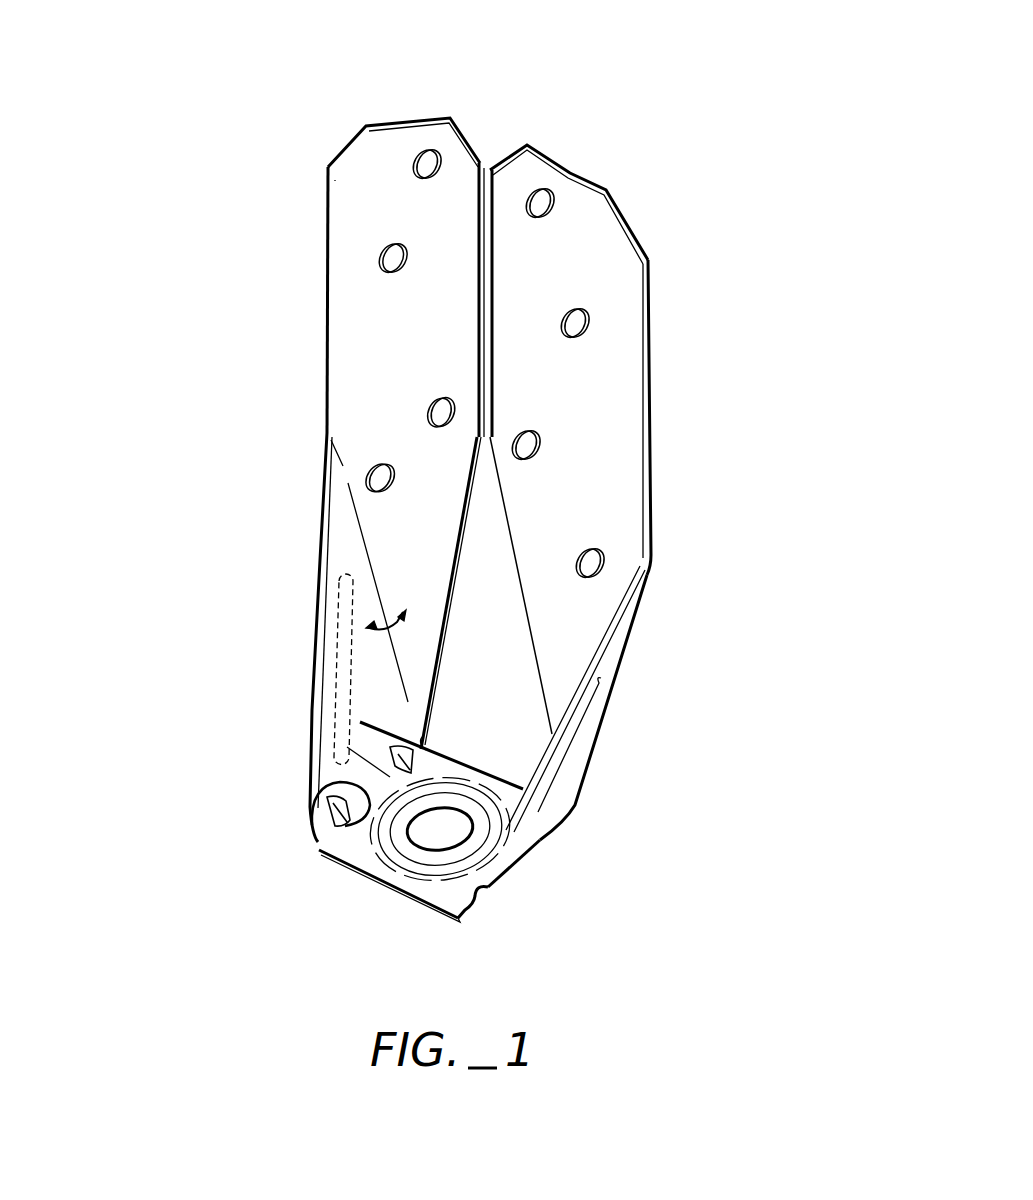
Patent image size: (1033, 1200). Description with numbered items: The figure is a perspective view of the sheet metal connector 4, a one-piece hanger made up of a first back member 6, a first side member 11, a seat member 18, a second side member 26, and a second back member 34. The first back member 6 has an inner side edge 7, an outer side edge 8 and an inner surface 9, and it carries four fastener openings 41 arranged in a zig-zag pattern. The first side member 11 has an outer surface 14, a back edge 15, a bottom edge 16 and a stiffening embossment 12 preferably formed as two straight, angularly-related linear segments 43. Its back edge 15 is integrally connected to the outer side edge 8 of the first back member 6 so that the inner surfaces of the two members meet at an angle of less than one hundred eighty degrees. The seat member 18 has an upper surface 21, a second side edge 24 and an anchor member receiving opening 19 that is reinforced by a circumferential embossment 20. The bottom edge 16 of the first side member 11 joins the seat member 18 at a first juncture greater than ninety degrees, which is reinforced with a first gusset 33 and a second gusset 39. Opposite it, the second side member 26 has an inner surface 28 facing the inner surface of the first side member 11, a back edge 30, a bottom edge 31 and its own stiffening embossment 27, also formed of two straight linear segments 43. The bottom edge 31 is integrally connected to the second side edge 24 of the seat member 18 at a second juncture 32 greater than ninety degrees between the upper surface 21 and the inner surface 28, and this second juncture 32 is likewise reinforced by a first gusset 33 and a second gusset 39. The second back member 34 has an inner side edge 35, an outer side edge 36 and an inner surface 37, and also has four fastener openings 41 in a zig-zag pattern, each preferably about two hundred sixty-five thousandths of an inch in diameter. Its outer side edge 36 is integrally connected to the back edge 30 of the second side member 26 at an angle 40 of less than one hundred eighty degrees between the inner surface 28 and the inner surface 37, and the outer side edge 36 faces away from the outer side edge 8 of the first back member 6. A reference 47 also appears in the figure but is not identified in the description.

The sheet metal connector 4 is at (553, 127).
The first back member 6 is at (640, 222).
The inner side edge 7 is at (492, 193).
The outer side edge 8 is at (645, 394).
The inner surface 9 is at (620, 488).
The first side member 11 is at (598, 775).
The stiffening embossment 12 is at (598, 725).
The outer surface 14 is at (606, 658).
The back edge 15 is at (596, 745).
The bottom edge 16 is at (489, 886).
The seat member 18 is at (425, 915).
The anchor member receiving opening 19 is at (382, 838).
The circumferential embossment 20 is at (323, 853).
The upper surface 21 is at (474, 905).
The second side edge 24 is at (323, 823).
The second side member 26 is at (297, 742).
The stiffening embossment 27 is at (330, 641).
The inner surface 28 is at (340, 552).
The back edge 30 is at (358, 510).
The bottom edge 31 is at (327, 813).
The second juncture 32 is at (323, 850).
The first gusset 33 is at (318, 833).
The second back member 34 is at (321, 213).
The inner side edge 35 is at (485, 210).
The outer side edge 36 is at (330, 358).
The inner surface 37 is at (352, 296).
The second gusset 39 is at (395, 757).
The angle 40 is at (378, 622).
The fastener openings 41 is at (437, 153).
The linear segments 43 is at (340, 678).
The lower edge of first flange 47 is at (350, 747).